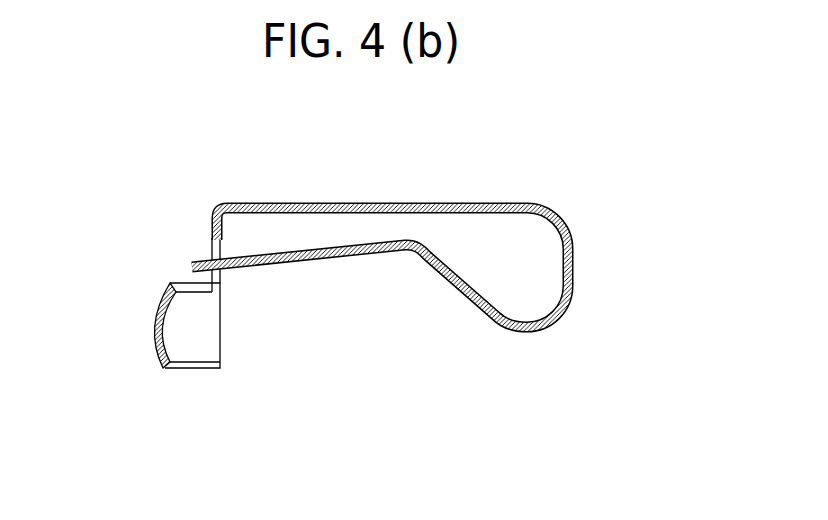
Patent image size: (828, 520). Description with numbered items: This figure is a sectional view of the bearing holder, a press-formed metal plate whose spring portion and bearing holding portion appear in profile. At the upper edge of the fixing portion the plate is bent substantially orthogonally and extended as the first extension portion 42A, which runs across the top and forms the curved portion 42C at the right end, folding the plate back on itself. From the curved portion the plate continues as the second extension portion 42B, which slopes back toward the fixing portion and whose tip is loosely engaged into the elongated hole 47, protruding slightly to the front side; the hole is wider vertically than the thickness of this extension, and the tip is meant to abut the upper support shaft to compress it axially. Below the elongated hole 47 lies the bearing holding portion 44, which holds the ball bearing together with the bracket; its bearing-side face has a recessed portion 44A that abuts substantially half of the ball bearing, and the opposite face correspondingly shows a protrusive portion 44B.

The first extension portion 42A is at (337, 202).
The second extension portion 42B is at (321, 260).
The curved portion 42C is at (575, 270).
The bearing holding portion 44 is at (150, 388).
The recessed portion 44A is at (162, 323).
The protrusive portion 44B is at (122, 358).
The elongated hole 47 is at (215, 252).